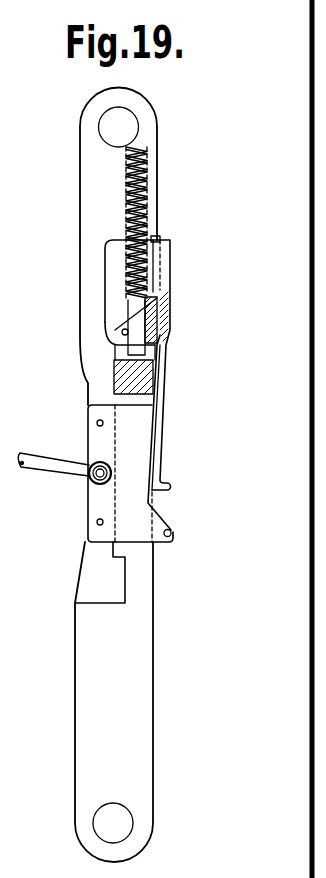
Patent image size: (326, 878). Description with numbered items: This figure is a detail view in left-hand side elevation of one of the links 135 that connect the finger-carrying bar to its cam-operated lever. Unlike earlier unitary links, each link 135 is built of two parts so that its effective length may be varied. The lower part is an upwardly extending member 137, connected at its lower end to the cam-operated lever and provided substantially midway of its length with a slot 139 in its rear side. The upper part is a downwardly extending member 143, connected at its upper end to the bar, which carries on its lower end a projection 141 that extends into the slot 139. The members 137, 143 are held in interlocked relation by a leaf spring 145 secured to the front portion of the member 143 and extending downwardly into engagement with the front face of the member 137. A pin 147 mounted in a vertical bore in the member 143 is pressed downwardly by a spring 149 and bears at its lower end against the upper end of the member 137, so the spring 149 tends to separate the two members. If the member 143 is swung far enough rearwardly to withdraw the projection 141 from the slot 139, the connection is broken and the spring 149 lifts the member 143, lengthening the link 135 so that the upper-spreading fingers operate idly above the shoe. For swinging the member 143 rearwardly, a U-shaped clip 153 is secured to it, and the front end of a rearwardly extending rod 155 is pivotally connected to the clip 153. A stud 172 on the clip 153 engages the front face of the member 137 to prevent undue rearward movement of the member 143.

The links 135 is at (155, 628).
The upwardly extending member 137 is at (143, 692).
The slot 139 is at (123, 564).
The projection 141 is at (118, 588).
The downwardly extending member 143 is at (90, 163).
The leaf spring 145 is at (165, 360).
The pin 147 is at (138, 319).
The spring 149 is at (139, 182).
The U-shaped clip 153 is at (95, 503).
The rod 155 is at (42, 461).
The stud 172 is at (172, 528).